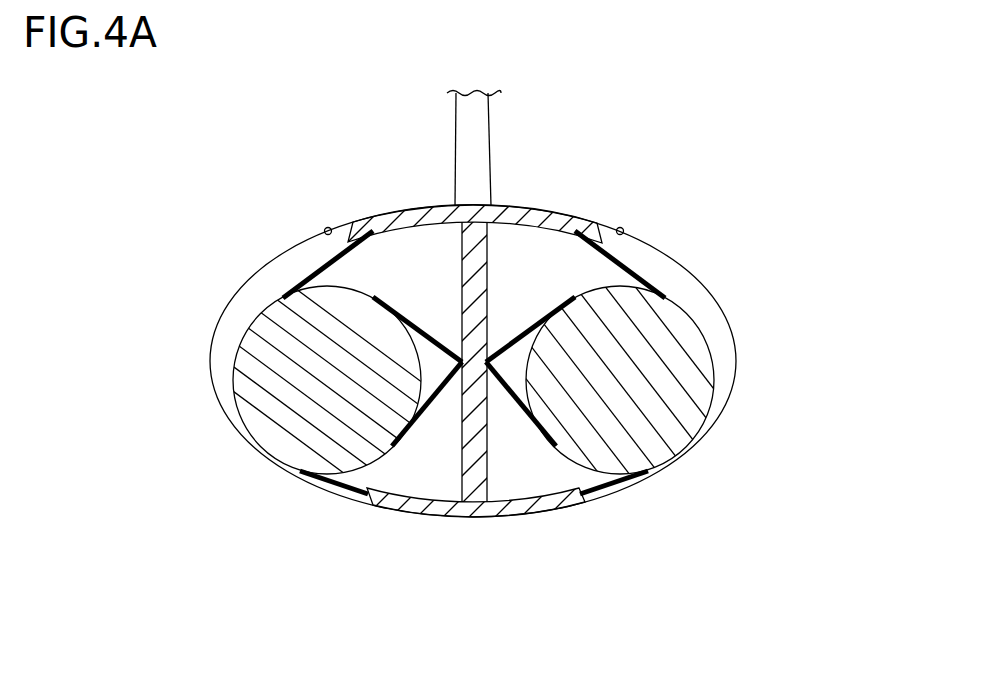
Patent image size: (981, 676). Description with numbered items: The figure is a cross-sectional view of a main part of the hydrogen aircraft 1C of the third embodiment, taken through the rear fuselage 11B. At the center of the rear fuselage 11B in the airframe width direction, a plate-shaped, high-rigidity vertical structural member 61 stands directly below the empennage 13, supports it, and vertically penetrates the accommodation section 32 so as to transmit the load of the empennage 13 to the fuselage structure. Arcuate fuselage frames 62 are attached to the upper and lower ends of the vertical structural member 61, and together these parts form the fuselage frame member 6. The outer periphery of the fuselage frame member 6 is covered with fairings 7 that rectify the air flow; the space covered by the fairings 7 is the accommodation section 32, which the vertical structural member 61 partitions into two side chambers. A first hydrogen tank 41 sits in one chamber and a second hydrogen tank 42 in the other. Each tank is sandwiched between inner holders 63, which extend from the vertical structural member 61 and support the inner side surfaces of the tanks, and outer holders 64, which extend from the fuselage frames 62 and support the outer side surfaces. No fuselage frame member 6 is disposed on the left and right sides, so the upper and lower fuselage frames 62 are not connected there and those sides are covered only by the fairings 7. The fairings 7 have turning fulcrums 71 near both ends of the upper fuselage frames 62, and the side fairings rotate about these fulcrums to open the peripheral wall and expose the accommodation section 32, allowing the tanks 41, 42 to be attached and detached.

The hydrogen aircraft 1C is at (686, 110).
The fuselage frame member 6 is at (438, 130).
The fairings 7 is at (733, 327).
The rear fuselage 11B is at (740, 248).
The empennage 13 is at (492, 138).
The accommodation section 32 is at (527, 473).
The first hydrogen tank 41 is at (257, 402).
The second hydrogen tank 42 is at (693, 402).
The vertical structural member 61 is at (462, 268).
The fuselage frames 62 is at (373, 228).
The inner holders 63 is at (435, 328).
The outer holders 64 is at (313, 275).
The turning fulcrums 71 is at (325, 229).